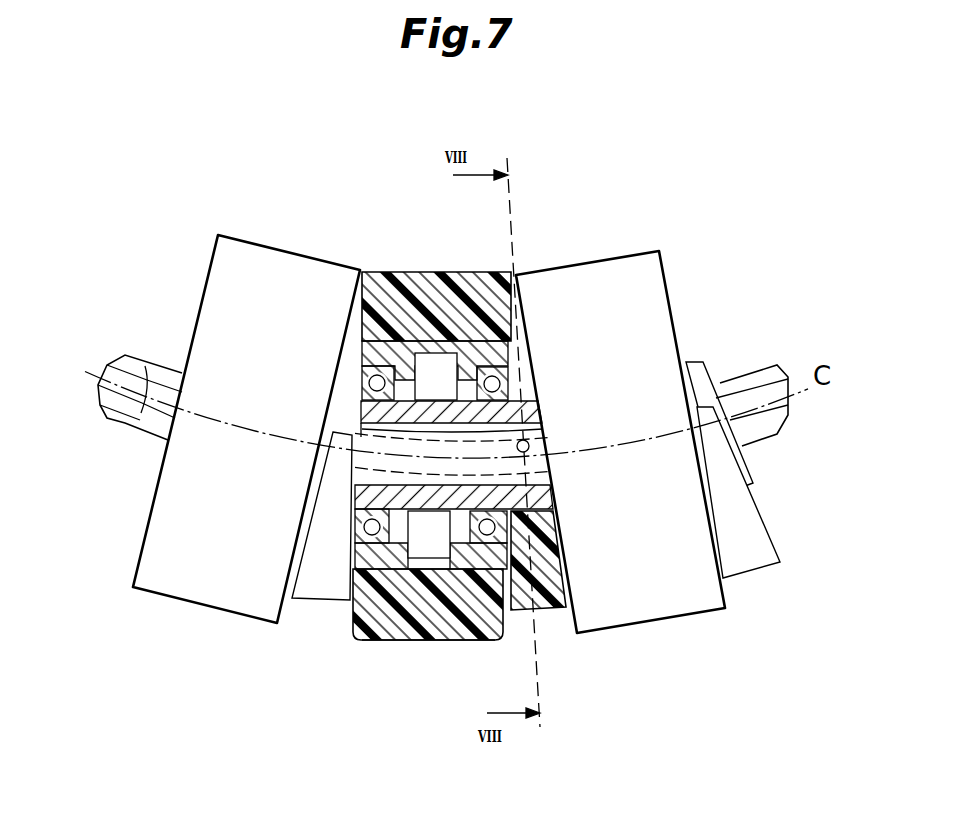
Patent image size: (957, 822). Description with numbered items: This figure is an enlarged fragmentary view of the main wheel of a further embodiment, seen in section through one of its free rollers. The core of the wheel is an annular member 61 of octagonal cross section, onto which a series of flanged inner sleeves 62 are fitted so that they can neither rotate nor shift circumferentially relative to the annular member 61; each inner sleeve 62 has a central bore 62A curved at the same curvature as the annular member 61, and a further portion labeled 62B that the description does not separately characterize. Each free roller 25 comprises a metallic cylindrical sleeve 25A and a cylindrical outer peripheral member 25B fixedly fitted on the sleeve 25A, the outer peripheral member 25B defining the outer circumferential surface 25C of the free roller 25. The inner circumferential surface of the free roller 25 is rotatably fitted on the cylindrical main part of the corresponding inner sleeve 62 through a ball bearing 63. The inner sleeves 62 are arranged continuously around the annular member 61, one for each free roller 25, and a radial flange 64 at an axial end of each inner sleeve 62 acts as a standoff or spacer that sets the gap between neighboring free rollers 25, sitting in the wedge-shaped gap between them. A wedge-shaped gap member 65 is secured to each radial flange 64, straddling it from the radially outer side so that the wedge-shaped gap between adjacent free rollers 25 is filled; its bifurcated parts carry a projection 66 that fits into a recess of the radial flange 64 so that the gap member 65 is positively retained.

The free roller 25 is at (452, 300).
The metallic cylindrical sleeve 25A is at (507, 350).
The cylindrical outer peripheral member 25B is at (407, 272).
The outer circumferential surface 25C is at (394, 643).
The annular member 61 is at (380, 436).
The flanged inner sleeve 62 is at (434, 508).
The central bore 62A is at (375, 478).
The lower elastic block 62B is at (357, 610).
The ball bearing 63 is at (362, 372).
The radial flange 64 is at (550, 508).
The gap member 65 is at (550, 610).
The projection 66 is at (530, 446).